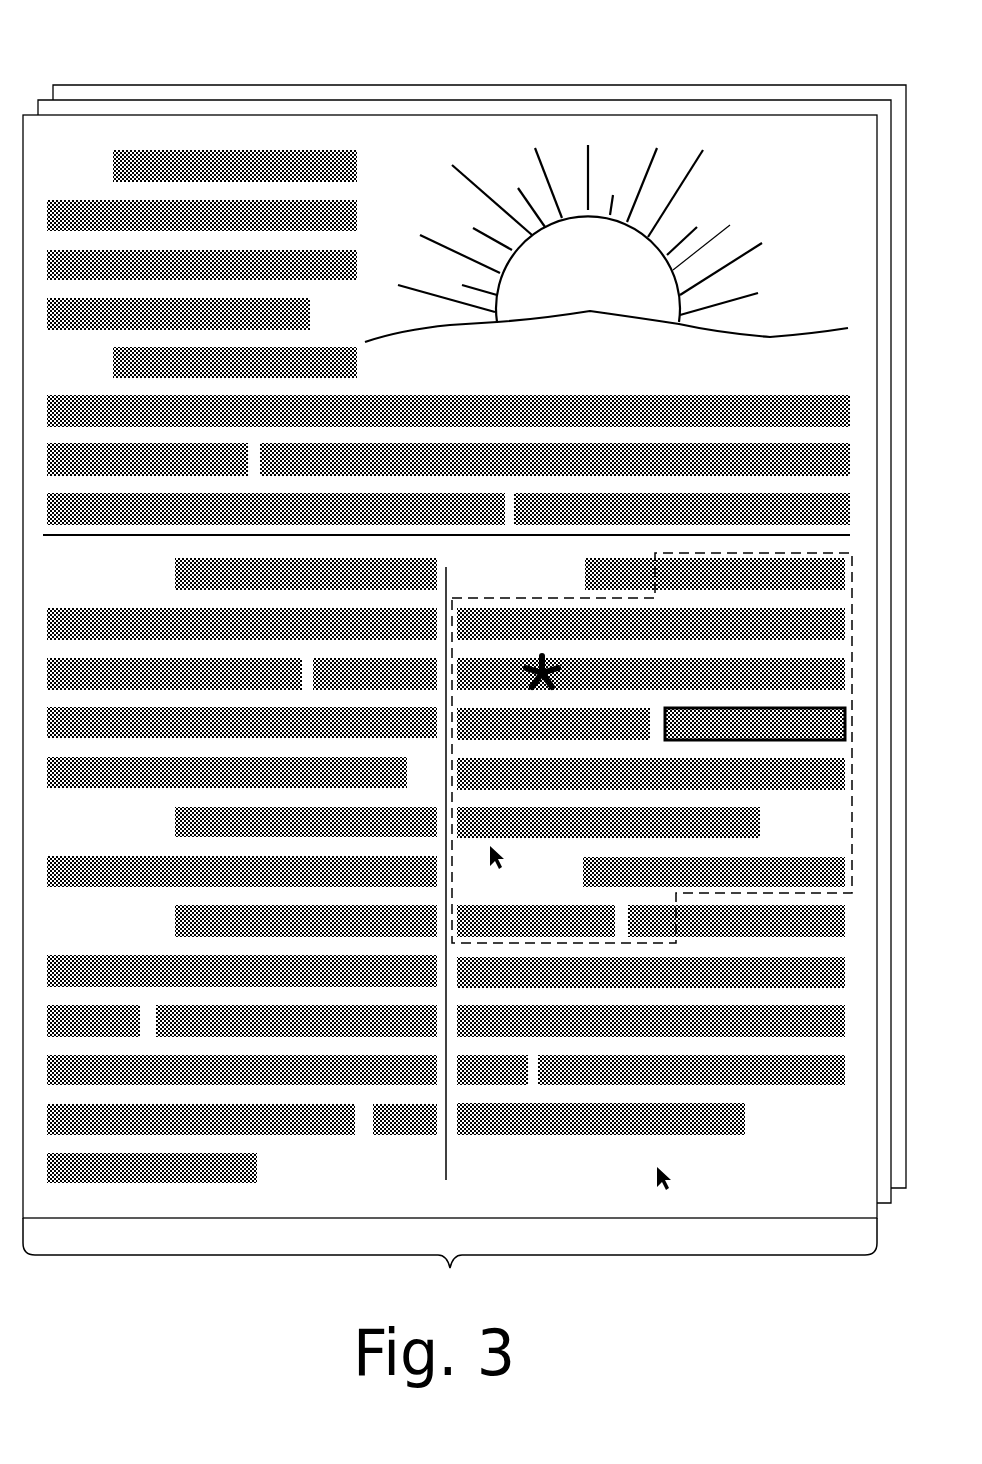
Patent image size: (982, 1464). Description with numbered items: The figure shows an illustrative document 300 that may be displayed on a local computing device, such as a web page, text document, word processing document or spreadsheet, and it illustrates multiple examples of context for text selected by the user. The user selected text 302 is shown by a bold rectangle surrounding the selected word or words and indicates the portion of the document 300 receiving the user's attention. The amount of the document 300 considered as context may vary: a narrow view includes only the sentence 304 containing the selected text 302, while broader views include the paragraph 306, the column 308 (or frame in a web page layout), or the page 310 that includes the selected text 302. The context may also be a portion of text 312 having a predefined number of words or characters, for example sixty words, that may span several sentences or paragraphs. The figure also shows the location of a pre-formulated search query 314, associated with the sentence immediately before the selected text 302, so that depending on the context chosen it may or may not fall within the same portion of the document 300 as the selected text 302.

The document 300 is at (108, 52).
The selected text 302 is at (772, 735).
The sentence 304 is at (765, 788).
The paragraph 306 is at (556, 883).
The column 308 is at (726, 1203).
The page 310 is at (450, 1261).
The portion of text 312 is at (548, 597).
The pre-formulated search query 314 is at (520, 668).